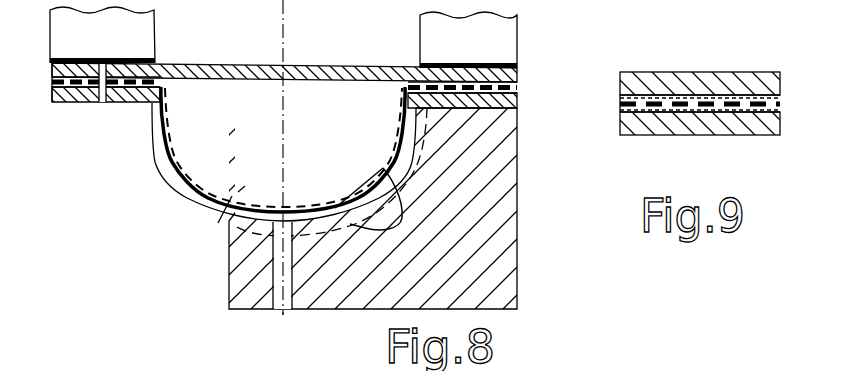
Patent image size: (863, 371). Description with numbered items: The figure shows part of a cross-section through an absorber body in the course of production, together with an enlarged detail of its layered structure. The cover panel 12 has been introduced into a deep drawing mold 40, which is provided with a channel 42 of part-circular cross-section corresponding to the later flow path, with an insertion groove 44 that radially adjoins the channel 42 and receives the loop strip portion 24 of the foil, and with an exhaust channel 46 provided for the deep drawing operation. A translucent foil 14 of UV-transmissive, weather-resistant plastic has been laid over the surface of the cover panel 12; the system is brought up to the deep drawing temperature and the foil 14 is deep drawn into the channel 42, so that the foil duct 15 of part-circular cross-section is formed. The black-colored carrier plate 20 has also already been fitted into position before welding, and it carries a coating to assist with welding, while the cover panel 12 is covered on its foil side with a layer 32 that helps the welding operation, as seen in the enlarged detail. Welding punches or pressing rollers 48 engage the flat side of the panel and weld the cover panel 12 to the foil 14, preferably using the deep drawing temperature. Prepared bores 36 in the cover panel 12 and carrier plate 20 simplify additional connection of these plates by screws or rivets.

In FIG. 8, the cover panel 12 is at (70, 103).
In FIG. 9, the cover panel 12 is at (735, 125).
In FIG. 8, the translucent foil 14 is at (165, 100).
In FIG. 9, the translucent foil 14 is at (621, 103).
In FIG. 8, the foil duct 15 is at (187, 200).
In FIG. 8, the carrier plate 20 is at (518, 70).
In FIG. 9, the carrier plate 20 is at (668, 82).
In FIG. 8, the loop strip portion 24 is at (156, 141).
In FIG. 9, the layer 32 is at (780, 115).
In FIG. 8, the prepared bore 36 is at (100, 110).
In FIG. 8, the deep drawing mold 40 is at (505, 247).
In FIG. 8, the channel 42 is at (218, 223).
In FIG. 8, the insertion groove 44 is at (363, 205).
In FIG. 8, the exhaust channel 46 is at (282, 310).
In FIG. 8, the welding punch 48 is at (103, 112).